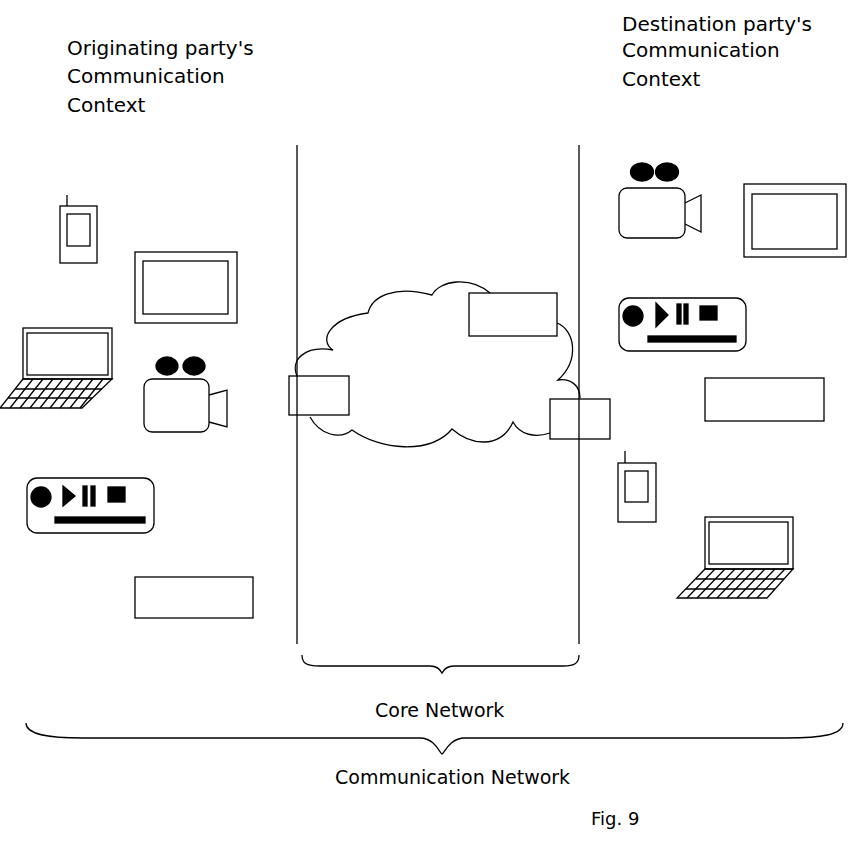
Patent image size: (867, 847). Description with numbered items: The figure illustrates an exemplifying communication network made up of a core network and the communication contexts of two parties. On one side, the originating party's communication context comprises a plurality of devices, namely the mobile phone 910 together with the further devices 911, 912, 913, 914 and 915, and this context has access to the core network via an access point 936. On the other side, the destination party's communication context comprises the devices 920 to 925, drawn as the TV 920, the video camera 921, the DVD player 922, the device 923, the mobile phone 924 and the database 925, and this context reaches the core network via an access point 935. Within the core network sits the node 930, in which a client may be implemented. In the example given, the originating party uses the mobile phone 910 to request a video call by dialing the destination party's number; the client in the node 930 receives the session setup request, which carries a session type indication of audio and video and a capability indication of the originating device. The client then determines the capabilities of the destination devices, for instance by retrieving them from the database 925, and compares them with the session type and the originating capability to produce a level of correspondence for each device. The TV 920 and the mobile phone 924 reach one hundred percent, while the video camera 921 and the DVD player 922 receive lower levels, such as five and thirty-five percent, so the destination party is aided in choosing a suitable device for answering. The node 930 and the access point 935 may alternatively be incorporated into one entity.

The mobile phone 910 is at (88, 203).
The device 911 is at (153, 251).
The device 912 is at (38, 327).
The device 913 is at (207, 380).
The device 914 is at (50, 478).
The device 915 is at (185, 577).
The TV 920 is at (762, 183).
The video camera 921 is at (650, 163).
The DVD player 922 is at (647, 297).
The device 923 is at (752, 516).
The mobile phone 924 is at (638, 462).
The database 925 is at (743, 377).
The node 930 is at (490, 293).
The access point 935 is at (563, 439).
The access point 936 is at (300, 415).